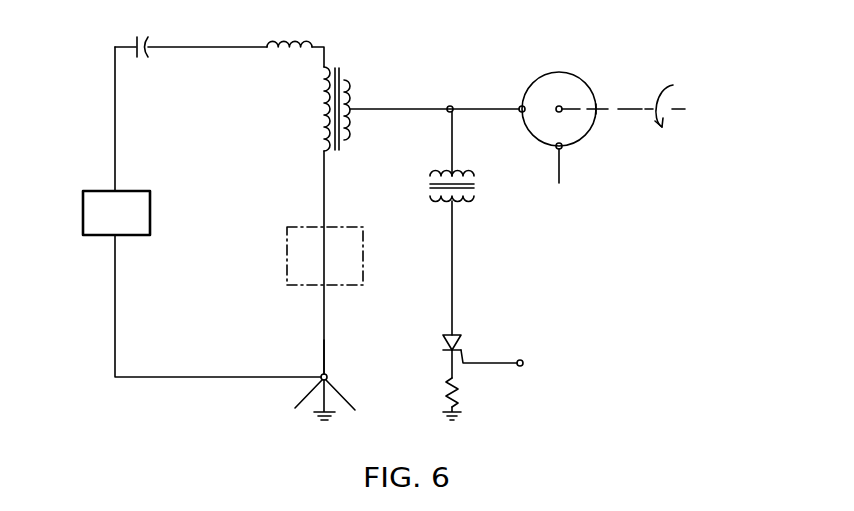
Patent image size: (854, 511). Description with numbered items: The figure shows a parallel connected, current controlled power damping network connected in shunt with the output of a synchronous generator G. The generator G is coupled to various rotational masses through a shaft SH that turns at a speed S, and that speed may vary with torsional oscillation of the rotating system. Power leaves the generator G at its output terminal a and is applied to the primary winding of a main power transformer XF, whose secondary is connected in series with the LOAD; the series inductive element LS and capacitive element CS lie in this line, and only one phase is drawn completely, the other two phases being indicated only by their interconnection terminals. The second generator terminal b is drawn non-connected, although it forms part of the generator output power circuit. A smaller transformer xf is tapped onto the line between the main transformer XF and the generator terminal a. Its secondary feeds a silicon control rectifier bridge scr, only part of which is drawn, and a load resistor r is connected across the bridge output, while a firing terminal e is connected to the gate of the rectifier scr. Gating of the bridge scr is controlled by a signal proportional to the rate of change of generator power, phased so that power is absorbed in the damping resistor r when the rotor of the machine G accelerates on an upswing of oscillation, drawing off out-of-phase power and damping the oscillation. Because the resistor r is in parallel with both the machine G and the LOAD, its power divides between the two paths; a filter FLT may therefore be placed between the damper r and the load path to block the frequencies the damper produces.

The capacitive element CS is at (141, 62).
The inductive element LS is at (283, 51).
The main power transformer XF is at (381, 58).
The load LOAD is at (116, 213).
The filter FLT is at (298, 226).
The output terminal a is at (520, 105).
The generator G is at (551, 100).
The generator terminal b is at (566, 148).
The shaft SH is at (630, 108).
The rotational speed S is at (674, 95).
The transformer xf is at (512, 196).
The silicon control rectifier bridge scr is at (442, 339).
The damping resistor r is at (446, 391).
The firing terminal e is at (524, 363).